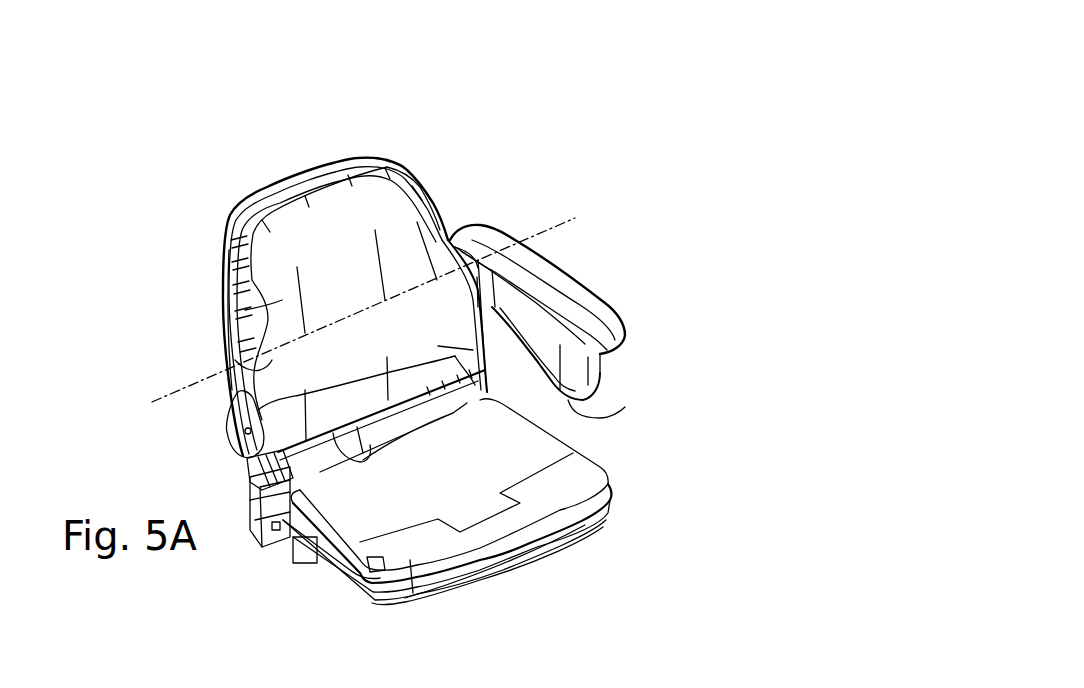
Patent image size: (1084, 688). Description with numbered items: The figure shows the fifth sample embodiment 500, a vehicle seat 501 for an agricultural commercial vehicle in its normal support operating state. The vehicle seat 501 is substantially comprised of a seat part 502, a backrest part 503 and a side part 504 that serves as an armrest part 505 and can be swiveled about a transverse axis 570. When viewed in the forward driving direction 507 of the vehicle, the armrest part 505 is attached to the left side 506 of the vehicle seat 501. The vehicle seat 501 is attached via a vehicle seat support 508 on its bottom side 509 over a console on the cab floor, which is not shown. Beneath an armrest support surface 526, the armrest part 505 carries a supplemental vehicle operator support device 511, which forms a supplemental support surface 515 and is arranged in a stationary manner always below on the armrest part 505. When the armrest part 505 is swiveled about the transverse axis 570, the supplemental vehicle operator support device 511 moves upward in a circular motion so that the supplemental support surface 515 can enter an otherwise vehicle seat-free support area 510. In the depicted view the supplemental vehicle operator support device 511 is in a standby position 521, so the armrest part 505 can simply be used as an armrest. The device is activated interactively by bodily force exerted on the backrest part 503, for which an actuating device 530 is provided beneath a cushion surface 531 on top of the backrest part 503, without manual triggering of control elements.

The fifth sample embodiment 500 is at (667, 95).
The vehicle seat 501 is at (367, 120).
The seat part 502 is at (373, 520).
The backrest part 503 is at (275, 236).
The side part 504 is at (586, 308).
The armrest part 505 is at (562, 287).
The left side 506 is at (686, 312).
The forward driving direction 507 is at (533, 577).
The vehicle seat support 508 is at (280, 540).
The bottom side 509 is at (465, 594).
The vehicle seat-free support area 510 is at (673, 457).
The supplemental vehicle operator support device 511 is at (625, 407).
The supplemental support surface 515 is at (536, 364).
The standby position 521 is at (660, 200).
The armrest support surface 526 is at (588, 308).
The actuating device 530 is at (390, 200).
The cushion surface 531 is at (321, 200).
The transverse axis 570 is at (183, 386).